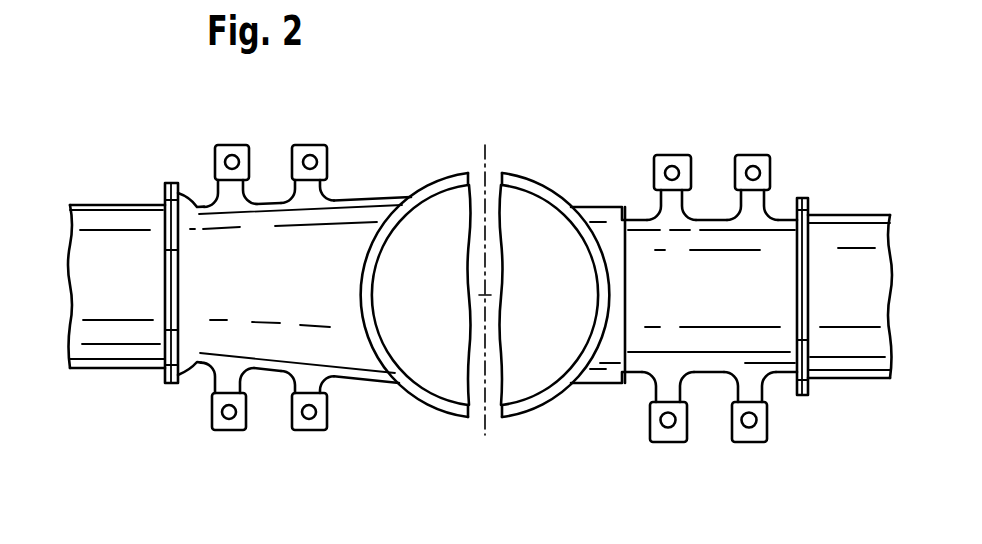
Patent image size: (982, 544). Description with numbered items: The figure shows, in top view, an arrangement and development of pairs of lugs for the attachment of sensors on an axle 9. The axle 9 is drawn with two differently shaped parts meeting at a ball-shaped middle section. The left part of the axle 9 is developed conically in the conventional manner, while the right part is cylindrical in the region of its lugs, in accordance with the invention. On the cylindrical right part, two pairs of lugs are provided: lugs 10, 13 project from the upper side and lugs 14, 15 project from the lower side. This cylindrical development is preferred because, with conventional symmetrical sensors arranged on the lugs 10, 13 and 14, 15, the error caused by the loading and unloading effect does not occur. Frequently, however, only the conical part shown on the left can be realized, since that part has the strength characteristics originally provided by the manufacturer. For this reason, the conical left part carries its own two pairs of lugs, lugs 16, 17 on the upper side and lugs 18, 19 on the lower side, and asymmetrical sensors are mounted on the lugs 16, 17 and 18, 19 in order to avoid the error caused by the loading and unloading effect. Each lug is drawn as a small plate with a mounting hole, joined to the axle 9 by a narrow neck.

The axle 9 is at (380, 193).
The lug 10 is at (673, 155).
The lug 13 is at (755, 155).
The lug 14 is at (678, 445).
The lug 15 is at (762, 445).
The lug 16 is at (218, 143).
The lug 17 is at (317, 143).
The lug 18 is at (242, 432).
The lug 19 is at (323, 432).